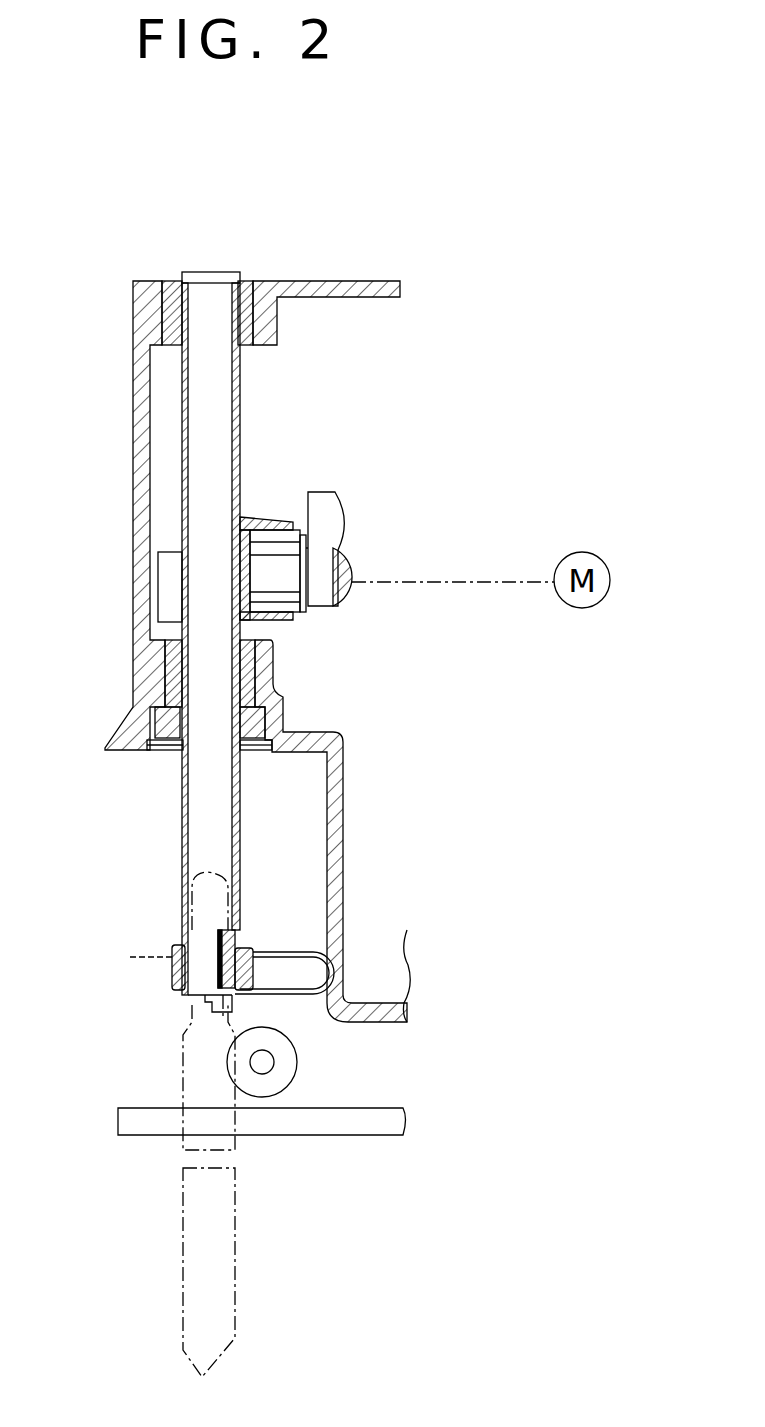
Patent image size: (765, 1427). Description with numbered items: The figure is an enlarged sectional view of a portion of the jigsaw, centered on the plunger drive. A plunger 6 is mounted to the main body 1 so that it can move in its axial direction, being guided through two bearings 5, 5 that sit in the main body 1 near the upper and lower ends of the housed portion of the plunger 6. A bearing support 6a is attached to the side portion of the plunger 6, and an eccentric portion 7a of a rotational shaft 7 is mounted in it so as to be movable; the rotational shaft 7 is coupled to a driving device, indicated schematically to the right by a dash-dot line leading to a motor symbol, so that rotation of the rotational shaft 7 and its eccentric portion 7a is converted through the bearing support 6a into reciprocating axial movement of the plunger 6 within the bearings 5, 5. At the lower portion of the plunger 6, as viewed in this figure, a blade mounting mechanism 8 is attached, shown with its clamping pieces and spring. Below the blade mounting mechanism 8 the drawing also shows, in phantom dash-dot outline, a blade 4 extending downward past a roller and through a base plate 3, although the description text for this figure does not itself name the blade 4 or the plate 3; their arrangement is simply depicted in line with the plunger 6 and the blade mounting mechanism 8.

The main body 1 is at (368, 312).
The work table 3 is at (377, 1118).
The tool 4 is at (223, 1272).
The bearing 5 is at (172, 290).
The plunger 6 is at (205, 407).
The bearing support 6a is at (253, 517).
The rotational shaft 7 is at (337, 517).
The eccentric portion 7a is at (280, 575).
The blade mounting mechanism 8 is at (160, 928).